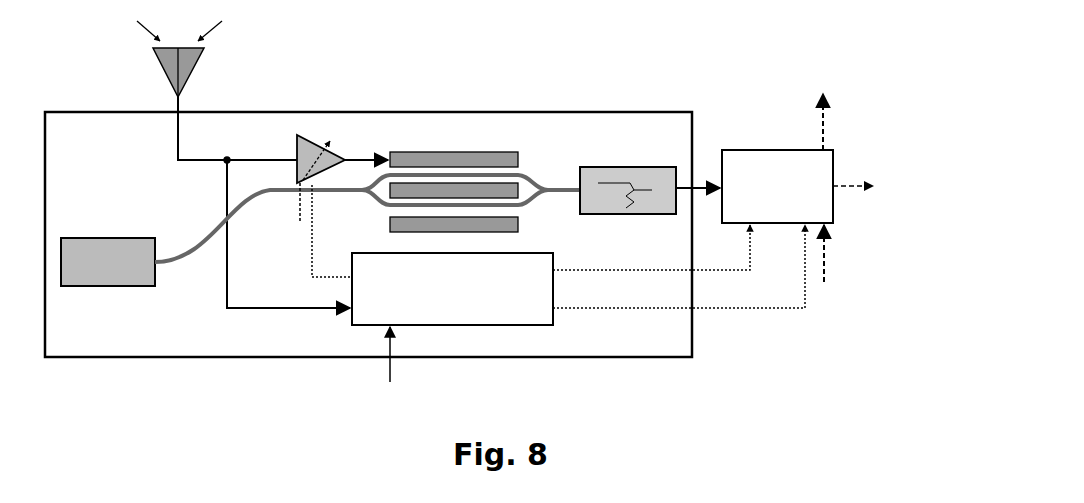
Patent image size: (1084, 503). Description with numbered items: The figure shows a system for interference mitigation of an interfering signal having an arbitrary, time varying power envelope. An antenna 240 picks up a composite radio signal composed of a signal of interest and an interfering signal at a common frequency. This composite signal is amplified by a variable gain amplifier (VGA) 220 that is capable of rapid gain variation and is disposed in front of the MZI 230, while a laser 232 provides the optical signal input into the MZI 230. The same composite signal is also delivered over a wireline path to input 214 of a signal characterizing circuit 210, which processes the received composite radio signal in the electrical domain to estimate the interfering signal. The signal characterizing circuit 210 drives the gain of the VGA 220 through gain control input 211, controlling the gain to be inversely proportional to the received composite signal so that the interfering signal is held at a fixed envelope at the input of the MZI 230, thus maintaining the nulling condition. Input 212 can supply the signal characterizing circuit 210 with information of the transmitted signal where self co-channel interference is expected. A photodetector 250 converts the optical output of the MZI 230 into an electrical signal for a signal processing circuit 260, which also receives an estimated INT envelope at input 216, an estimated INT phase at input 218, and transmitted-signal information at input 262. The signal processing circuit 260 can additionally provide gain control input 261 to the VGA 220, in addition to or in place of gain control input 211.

The antenna 240 is at (193, 70).
The variable gain amplifier (VGA) 220 is at (304, 136).
The MZI 230 is at (494, 152).
The photodetector 250 is at (620, 167).
The signal processing circuit 260 is at (750, 150).
The gain control input 261 is at (823, 112).
The gain control input 211 is at (314, 228).
The signal characterizing circuit 210 is at (515, 325).
The input 212 is at (388, 375).
The input 214 is at (265, 310).
The input 216 is at (740, 272).
The input 218 is at (722, 312).
The laser 232 is at (108, 286).
The input 262 is at (826, 268).